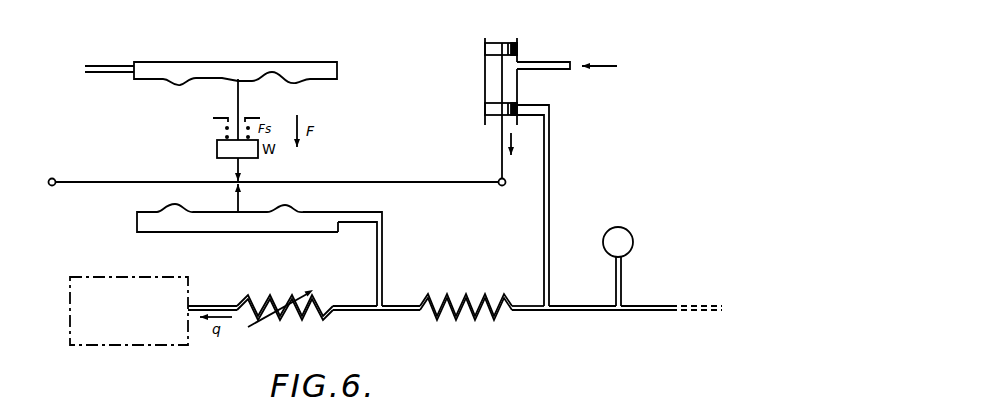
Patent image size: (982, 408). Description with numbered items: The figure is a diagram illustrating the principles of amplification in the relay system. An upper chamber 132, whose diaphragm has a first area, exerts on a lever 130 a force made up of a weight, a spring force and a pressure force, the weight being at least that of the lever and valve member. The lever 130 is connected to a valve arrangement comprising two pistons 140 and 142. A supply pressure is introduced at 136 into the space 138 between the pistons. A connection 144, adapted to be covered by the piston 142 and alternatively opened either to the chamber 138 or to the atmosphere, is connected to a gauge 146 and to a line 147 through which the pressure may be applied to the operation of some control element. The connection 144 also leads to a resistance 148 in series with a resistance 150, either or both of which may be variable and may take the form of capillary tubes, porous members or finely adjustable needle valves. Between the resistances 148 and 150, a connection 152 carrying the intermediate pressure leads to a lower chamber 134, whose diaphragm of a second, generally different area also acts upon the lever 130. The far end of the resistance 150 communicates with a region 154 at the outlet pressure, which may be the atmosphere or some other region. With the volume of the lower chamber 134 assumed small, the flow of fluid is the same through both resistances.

The lever 130 is at (358, 180).
The upper chamber 132 is at (337, 70).
The lower chamber 134 is at (342, 211).
The supply pressure inlet 136 is at (534, 62).
The space between the pistons 138 is at (486, 72).
The piston 140 is at (499, 46).
The piston 142 is at (486, 108).
The connection 144 is at (550, 108).
The gauge 146 is at (632, 242).
The line 147 is at (653, 304).
The resistance 148 is at (468, 298).
The resistance 150 is at (263, 308).
The connection 152 is at (384, 234).
The region 154 is at (75, 303).